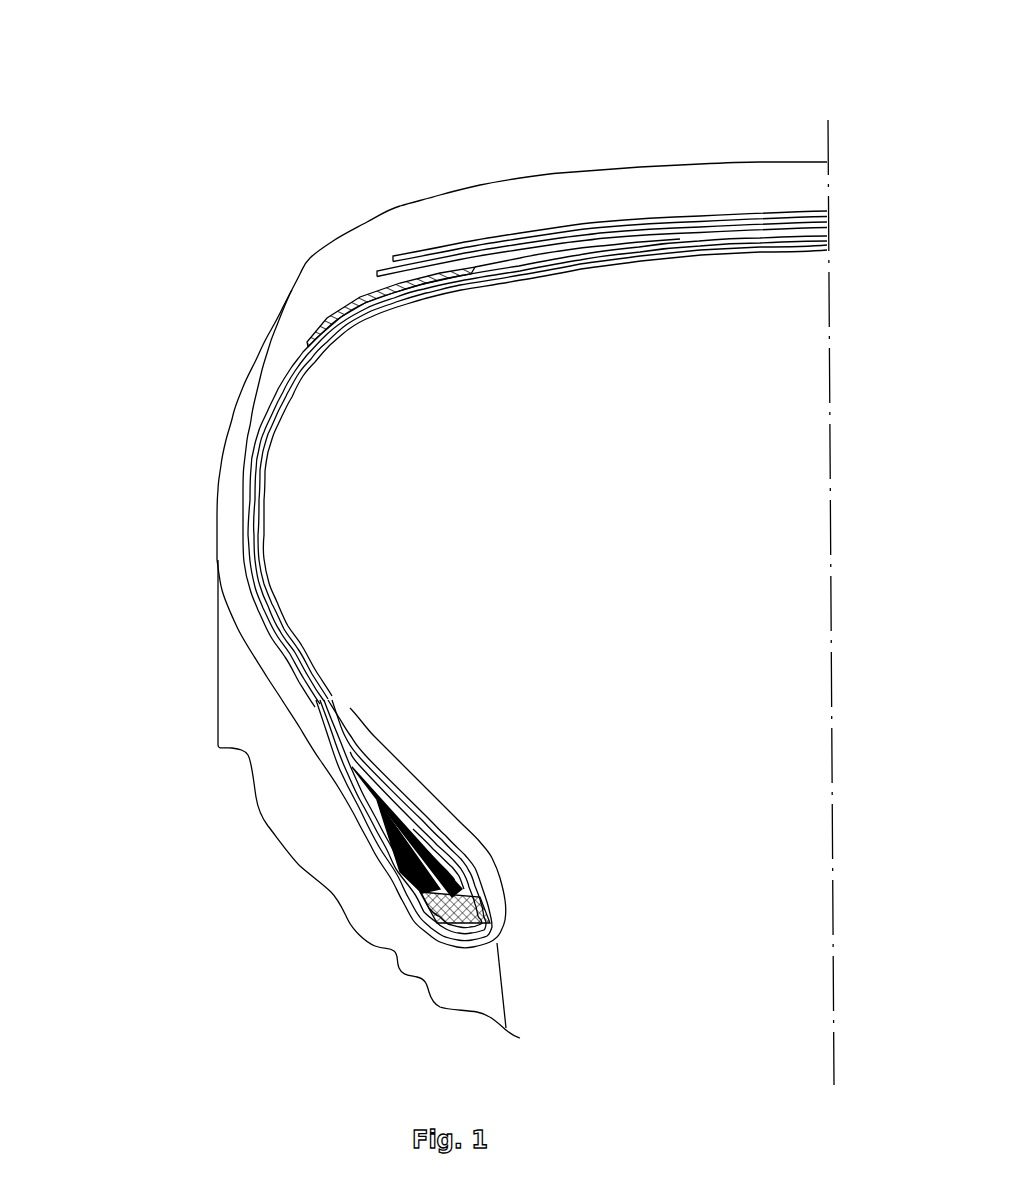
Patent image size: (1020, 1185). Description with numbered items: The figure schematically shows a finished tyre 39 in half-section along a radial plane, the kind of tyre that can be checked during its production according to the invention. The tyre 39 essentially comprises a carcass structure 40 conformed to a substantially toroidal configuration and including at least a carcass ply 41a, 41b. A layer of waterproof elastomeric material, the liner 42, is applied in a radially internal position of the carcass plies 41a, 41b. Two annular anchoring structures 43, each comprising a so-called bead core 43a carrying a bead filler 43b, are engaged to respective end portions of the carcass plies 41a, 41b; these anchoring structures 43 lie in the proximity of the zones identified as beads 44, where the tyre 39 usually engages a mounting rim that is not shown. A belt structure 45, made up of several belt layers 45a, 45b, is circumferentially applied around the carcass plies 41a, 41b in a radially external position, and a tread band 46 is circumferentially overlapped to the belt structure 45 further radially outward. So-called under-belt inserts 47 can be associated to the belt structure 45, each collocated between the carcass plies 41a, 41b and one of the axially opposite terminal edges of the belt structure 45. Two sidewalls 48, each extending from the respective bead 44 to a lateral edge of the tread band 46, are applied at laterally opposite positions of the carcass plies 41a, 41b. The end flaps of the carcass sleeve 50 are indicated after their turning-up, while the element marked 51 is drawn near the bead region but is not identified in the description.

The tyre 39 is at (176, 587).
The carcass structure 40 is at (231, 515).
The carcass ply 41a is at (320, 713).
The carcass ply 41b is at (293, 677).
The liner 42 is at (417, 303).
The annular anchoring structure 43 is at (430, 820).
The bead core 43a is at (477, 912).
The bead filler 43b is at (400, 820).
The bead 44 is at (498, 850).
The belt structure 45 is at (604, 155).
The belt layer 45a is at (607, 223).
The belt layer 45b is at (642, 230).
The tread band 46 is at (700, 178).
The under-belt insert 47 is at (373, 287).
The sidewall 48 is at (230, 455).
The end flaps of the carcass sleeve 50 is at (378, 888).
The rim strip 51 is at (320, 755).